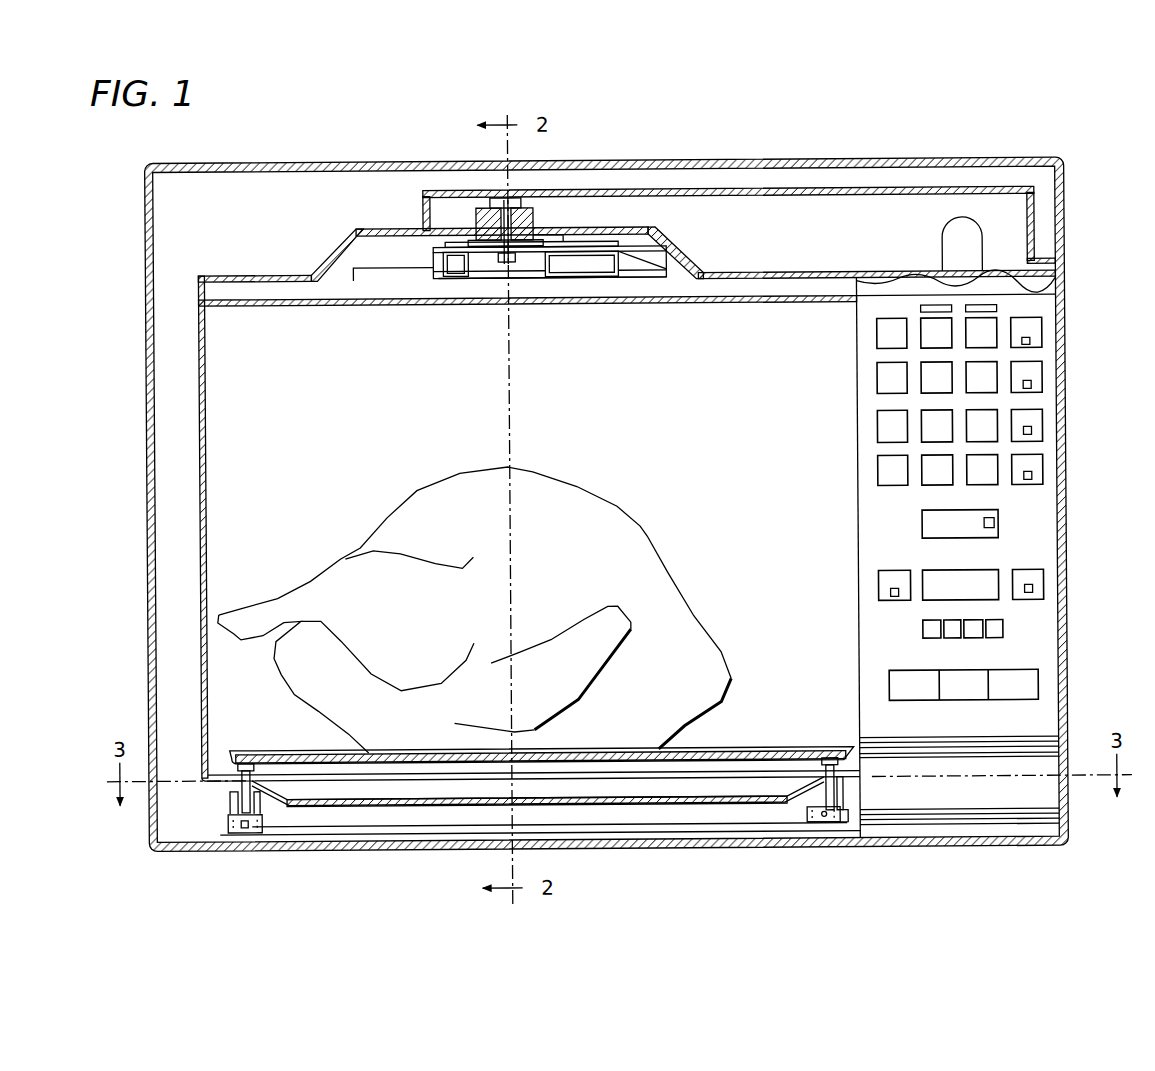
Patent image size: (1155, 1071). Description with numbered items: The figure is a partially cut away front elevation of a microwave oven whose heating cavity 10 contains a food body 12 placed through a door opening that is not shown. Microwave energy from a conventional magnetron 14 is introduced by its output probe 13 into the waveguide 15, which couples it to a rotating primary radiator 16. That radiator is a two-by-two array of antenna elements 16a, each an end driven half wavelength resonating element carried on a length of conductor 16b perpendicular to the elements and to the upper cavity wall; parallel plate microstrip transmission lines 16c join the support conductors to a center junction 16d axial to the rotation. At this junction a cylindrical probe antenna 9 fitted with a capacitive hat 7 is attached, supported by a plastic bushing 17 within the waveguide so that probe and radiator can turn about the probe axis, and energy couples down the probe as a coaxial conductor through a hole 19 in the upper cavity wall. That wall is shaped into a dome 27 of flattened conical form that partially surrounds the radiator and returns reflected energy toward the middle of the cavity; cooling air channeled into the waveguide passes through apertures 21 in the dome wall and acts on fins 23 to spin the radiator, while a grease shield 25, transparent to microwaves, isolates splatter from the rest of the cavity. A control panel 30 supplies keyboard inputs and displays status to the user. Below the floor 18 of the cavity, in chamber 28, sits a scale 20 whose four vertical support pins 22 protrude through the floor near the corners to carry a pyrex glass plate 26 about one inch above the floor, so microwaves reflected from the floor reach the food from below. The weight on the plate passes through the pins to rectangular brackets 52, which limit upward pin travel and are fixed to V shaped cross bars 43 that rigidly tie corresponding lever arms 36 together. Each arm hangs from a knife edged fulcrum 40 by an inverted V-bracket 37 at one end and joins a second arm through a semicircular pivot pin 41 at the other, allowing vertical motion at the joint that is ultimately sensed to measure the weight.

The capacitive hat 7 is at (502, 200).
The probe antenna 9 is at (510, 228).
The heating cavity 10 is at (264, 374).
The food body 12 is at (617, 507).
The output probe 13 is at (962, 230).
The magnetron 14 is at (1066, 270).
The waveguide 15 is at (788, 224).
The primary radiator 16 is at (498, 286).
The antenna elements 16a is at (528, 280).
The support conductor 16b is at (445, 263).
The parallel plate microstrip transmission lines 16c is at (563, 242).
The center junction 16d is at (503, 262).
The plastic bushing 17 is at (480, 208).
The floor 18 is at (213, 781).
The hole 19 is at (540, 232).
The scale 20 is at (337, 835).
The apertures 21 is at (345, 256).
The vertical support pins 22 is at (250, 764).
The fins 23 is at (353, 282).
The grease shield 25 is at (750, 304).
The plate 26 is at (803, 745).
The dome 27 is at (380, 228).
The chamber 28 is at (174, 829).
The control panel 30 is at (1070, 582).
The lever arms 36 is at (845, 786).
The inverted V-bracket 37 is at (843, 826).
The knife edged fulcrum 40 is at (798, 816).
The semicircular pivot pin 41 is at (226, 818).
The V shaped cross bar 43 is at (440, 827).
The rectangular brackets 52 is at (258, 796).